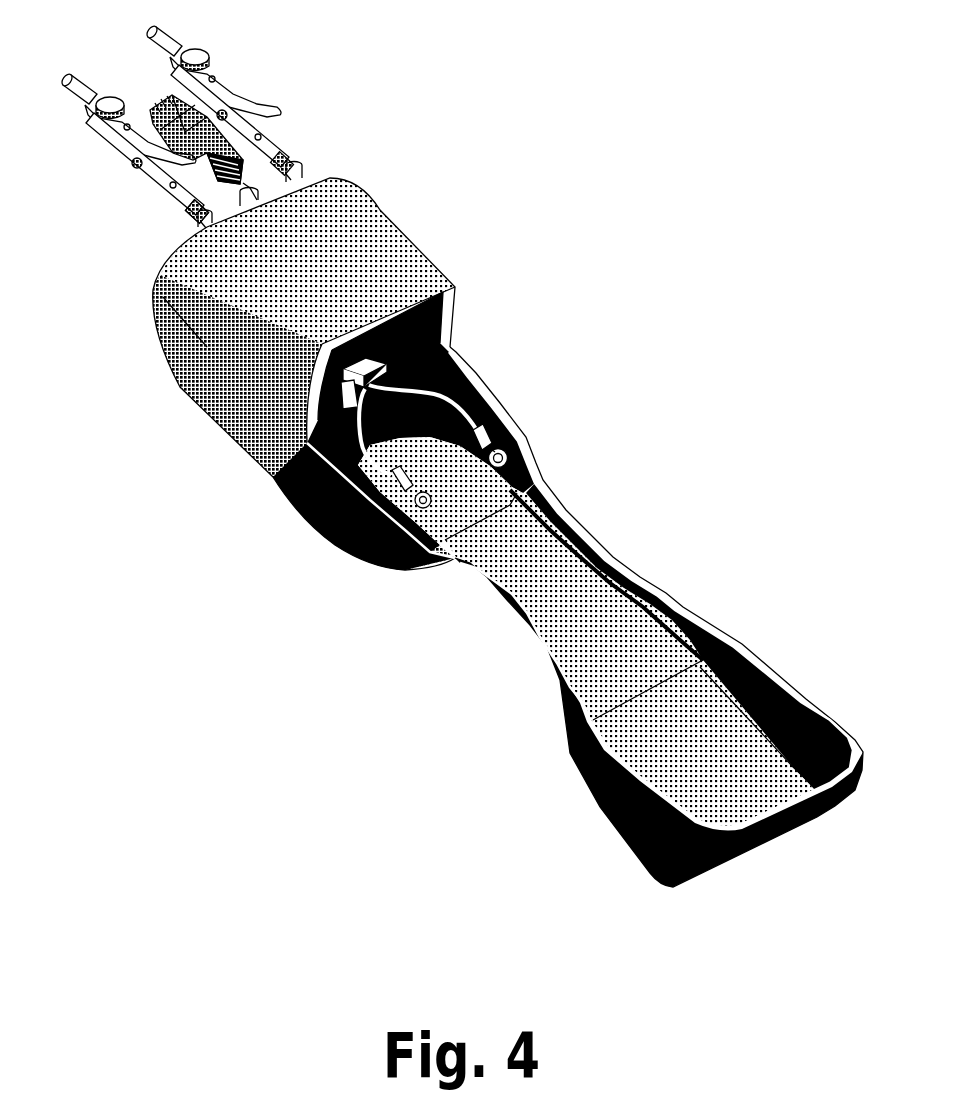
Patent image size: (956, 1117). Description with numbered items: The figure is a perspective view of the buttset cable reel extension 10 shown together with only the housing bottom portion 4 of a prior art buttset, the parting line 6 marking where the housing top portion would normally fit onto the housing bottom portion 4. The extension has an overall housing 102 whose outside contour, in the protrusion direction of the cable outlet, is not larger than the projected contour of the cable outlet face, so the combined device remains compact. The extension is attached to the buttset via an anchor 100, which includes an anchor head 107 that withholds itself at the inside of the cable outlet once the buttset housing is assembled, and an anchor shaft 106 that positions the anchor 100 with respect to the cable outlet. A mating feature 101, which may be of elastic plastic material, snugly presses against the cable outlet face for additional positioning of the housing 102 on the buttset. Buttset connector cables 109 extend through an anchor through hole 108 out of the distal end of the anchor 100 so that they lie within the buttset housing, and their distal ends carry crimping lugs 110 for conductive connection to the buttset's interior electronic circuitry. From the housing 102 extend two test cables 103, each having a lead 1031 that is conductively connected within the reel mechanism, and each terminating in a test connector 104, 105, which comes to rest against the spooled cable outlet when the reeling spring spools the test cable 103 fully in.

The housing bottom portion 4 is at (617, 781).
The parting line 6 is at (650, 577).
The buttset cable reel extension 10 is at (412, 185).
The anchor 100 is at (455, 342).
The mating feature 101 is at (283, 483).
The housing 102 is at (215, 390).
The test cable 103 is at (240, 188).
The lead 1031 is at (197, 213).
The test connector 104 is at (258, 107).
The test connector 105 is at (168, 102).
The anchor shaft 106 is at (390, 355).
The anchor head 107 is at (378, 374).
The anchor through hole 108 is at (345, 398).
The buttset connector cable 109 is at (383, 463).
The crimping lug 110 is at (414, 506).